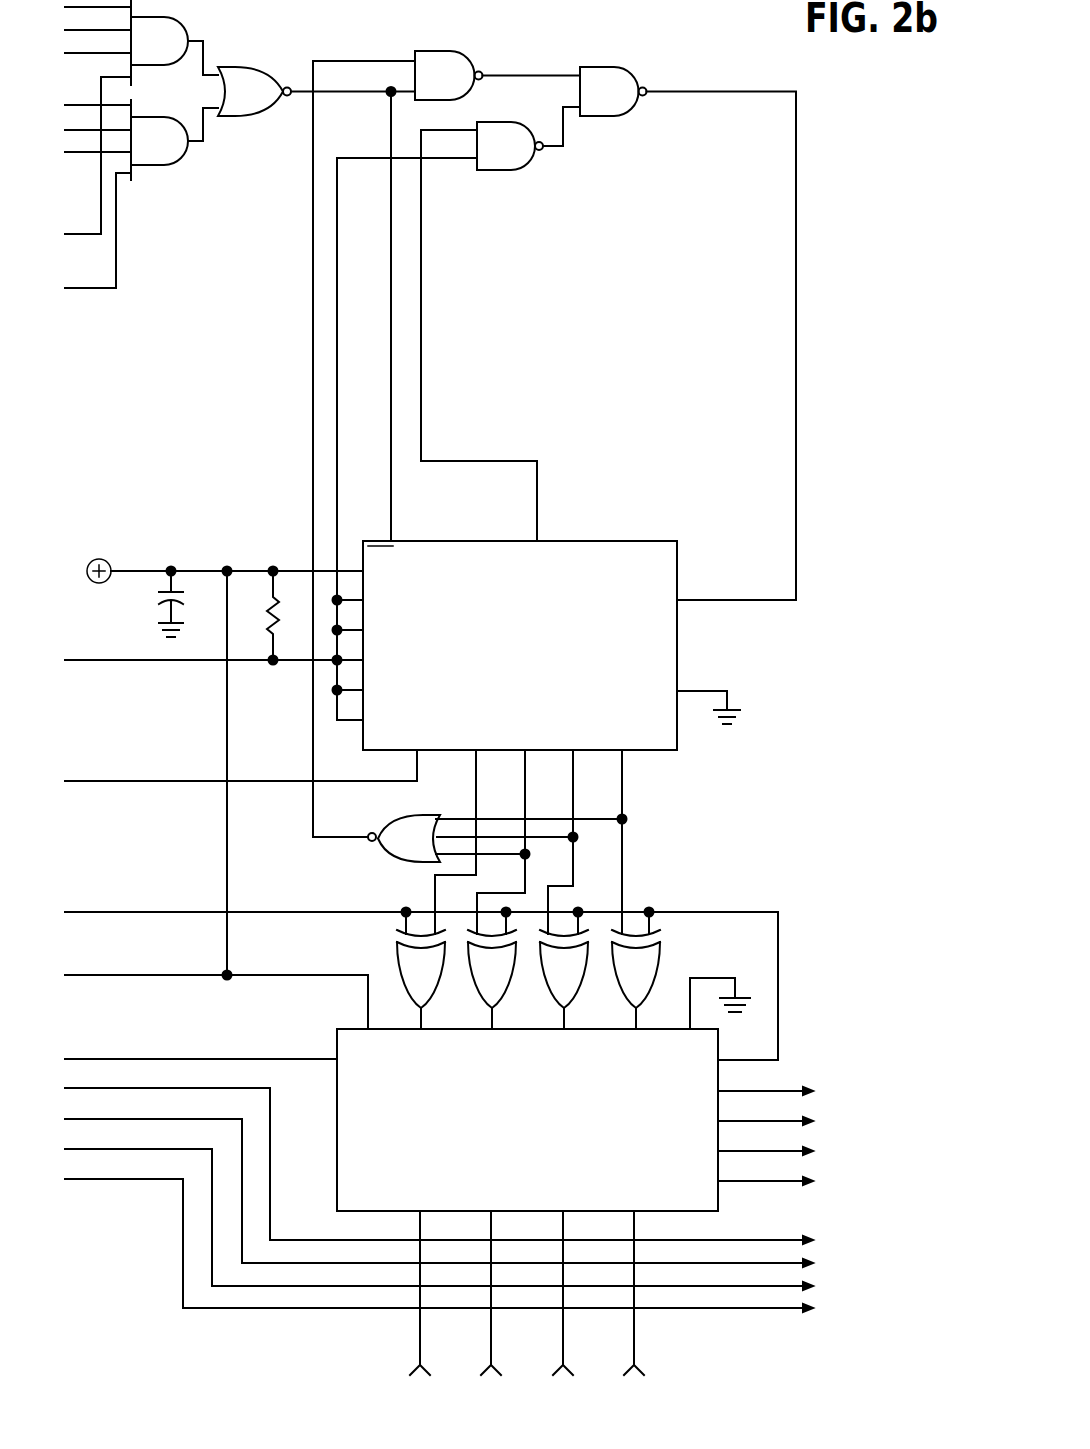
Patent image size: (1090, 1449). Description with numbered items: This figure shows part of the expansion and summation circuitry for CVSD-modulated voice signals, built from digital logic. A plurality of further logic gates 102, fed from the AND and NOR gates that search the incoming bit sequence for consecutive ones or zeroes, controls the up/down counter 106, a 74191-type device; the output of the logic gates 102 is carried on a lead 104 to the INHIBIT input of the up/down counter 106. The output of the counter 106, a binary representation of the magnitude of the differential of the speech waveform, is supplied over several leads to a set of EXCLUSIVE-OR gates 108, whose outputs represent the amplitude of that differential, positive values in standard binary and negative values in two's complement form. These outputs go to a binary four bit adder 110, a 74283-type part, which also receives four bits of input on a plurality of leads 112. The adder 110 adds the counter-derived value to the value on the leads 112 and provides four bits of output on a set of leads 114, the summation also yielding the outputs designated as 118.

The plurality of logic gates 102 is at (643, 219).
The lead 104 is at (796, 532).
The up/down counter 106 is at (642, 750).
The EXCLUSIVE-OR gates 108 is at (668, 882).
The binary four bit adder 110 is at (661, 1131).
The leads 112 is at (372, 1352).
The leads 114 is at (792, 1065).
The outputs 118 is at (795, 1324).